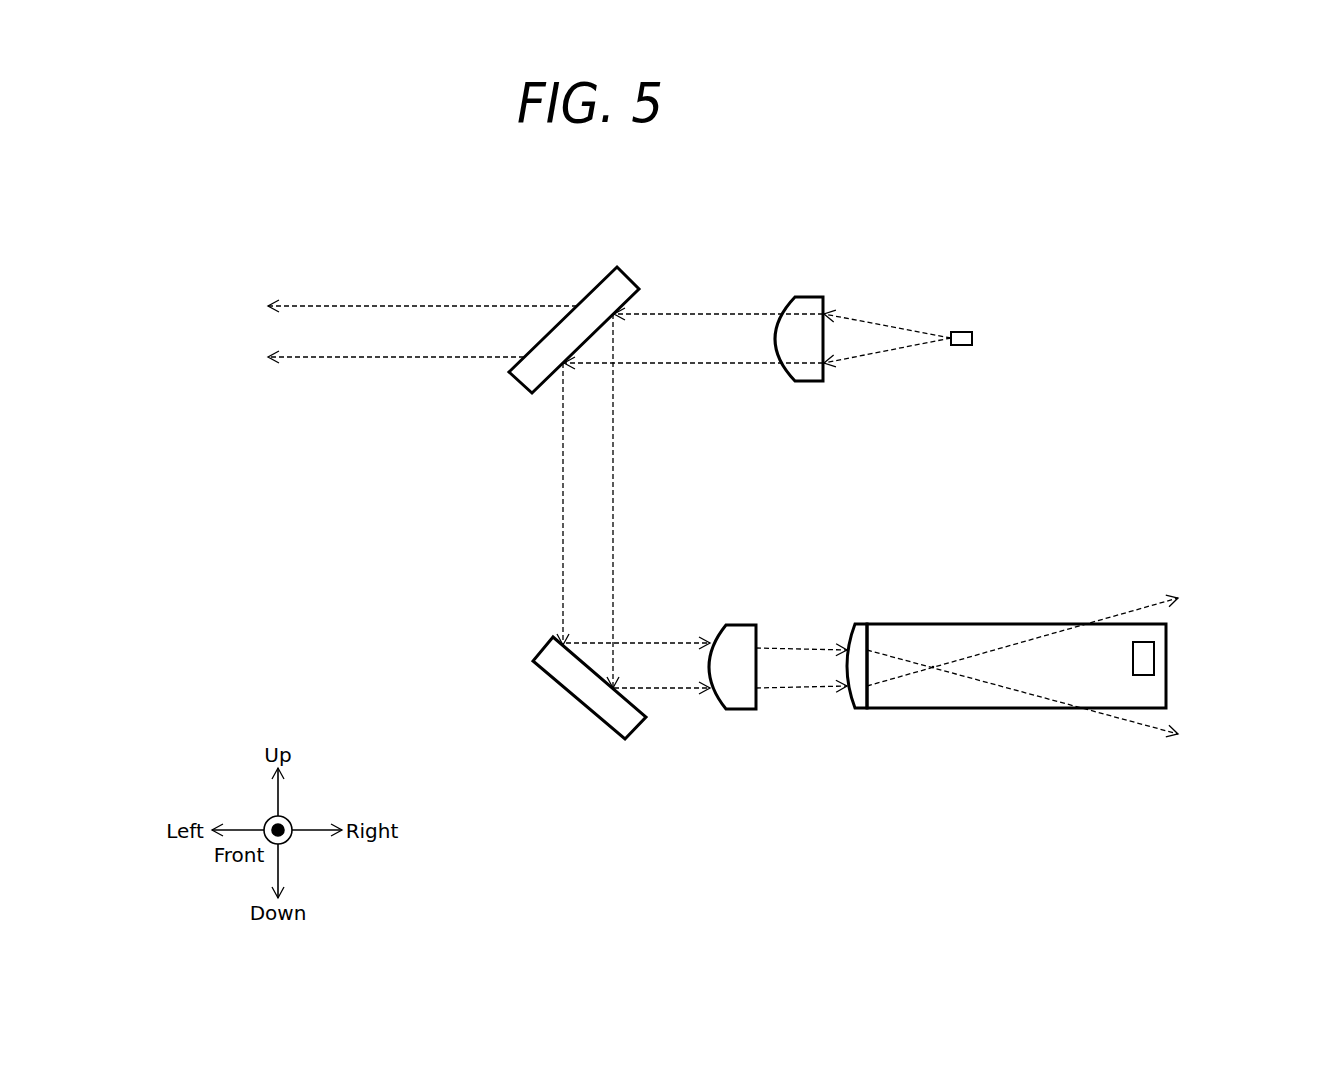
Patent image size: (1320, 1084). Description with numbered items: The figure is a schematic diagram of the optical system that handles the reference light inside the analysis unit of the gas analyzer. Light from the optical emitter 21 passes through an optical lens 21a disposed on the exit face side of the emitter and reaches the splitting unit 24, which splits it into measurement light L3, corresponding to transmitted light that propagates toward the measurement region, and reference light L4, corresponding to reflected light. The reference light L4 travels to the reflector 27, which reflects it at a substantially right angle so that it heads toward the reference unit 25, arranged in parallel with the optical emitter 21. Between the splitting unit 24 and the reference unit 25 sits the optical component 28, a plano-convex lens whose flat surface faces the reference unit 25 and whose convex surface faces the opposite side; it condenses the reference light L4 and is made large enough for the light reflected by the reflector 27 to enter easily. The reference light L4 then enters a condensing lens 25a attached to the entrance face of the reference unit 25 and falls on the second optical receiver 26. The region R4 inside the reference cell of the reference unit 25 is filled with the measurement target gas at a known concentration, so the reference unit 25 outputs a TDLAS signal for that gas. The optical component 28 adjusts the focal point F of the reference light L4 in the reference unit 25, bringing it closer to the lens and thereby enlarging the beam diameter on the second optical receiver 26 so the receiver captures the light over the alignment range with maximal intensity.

The optical emitter 21 is at (963, 345).
The optical lens 21a is at (810, 381).
The splitting unit 24 is at (589, 292).
The reference unit 25 is at (1033, 624).
The condensing lens 25a is at (858, 708).
The second optical receiver 26 is at (1154, 658).
The reflector 27 is at (604, 723).
The optical component 28 is at (737, 709).
The focal point F is at (933, 667).
The measurement light L3 is at (423, 306).
The reference light L4 is at (562, 556).
The region inside the reference cell R4 is at (1036, 681).